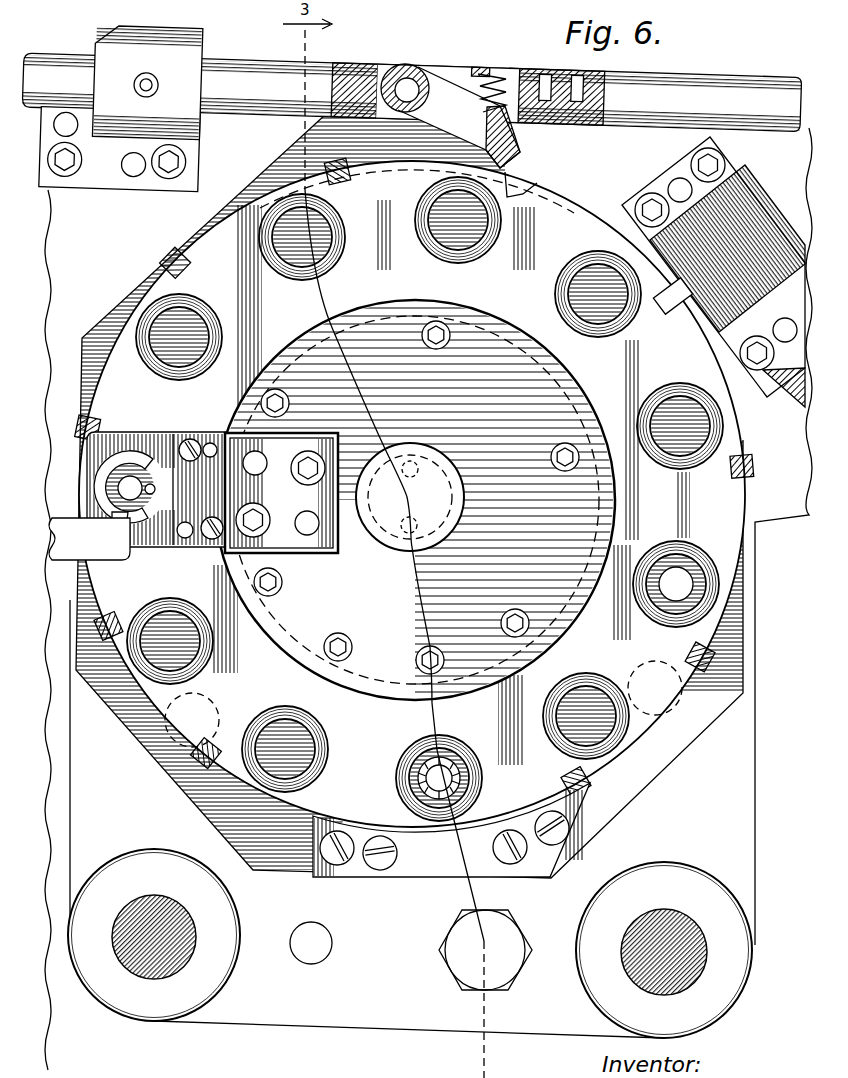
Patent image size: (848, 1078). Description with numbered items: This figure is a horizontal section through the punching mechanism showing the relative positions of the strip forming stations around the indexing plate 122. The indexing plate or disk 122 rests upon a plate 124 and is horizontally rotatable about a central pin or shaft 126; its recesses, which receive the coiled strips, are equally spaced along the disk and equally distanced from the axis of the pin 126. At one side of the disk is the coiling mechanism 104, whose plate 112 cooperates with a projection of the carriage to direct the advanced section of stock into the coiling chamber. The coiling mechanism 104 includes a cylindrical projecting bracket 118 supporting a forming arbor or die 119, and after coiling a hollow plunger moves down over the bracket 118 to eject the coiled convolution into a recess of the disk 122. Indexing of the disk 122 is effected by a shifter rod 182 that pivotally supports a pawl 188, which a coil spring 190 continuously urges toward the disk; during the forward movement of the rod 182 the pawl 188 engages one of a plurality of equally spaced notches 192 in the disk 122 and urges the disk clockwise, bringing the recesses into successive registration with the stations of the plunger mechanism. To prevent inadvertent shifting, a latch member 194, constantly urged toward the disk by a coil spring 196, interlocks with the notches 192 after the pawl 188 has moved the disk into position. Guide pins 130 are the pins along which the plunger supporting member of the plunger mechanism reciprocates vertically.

The shifter rod 182 is at (411, 116).
The pawl 188 is at (450, 116).
The coil spring 190 is at (505, 74).
The notches 192 is at (528, 197).
The coil spring 196 is at (676, 176).
The latch member 194 is at (676, 306).
The coiling mechanism 104 is at (163, 430).
The cylindrical projecting bracket 118 is at (112, 485).
The forming arbor or die 119 is at (121, 530).
The plate 112 is at (163, 533).
The central pin or shaft 126 is at (435, 478).
The indexing plate 122 is at (641, 727).
The plate 124 is at (630, 786).
The guide pins 130 is at (165, 975).